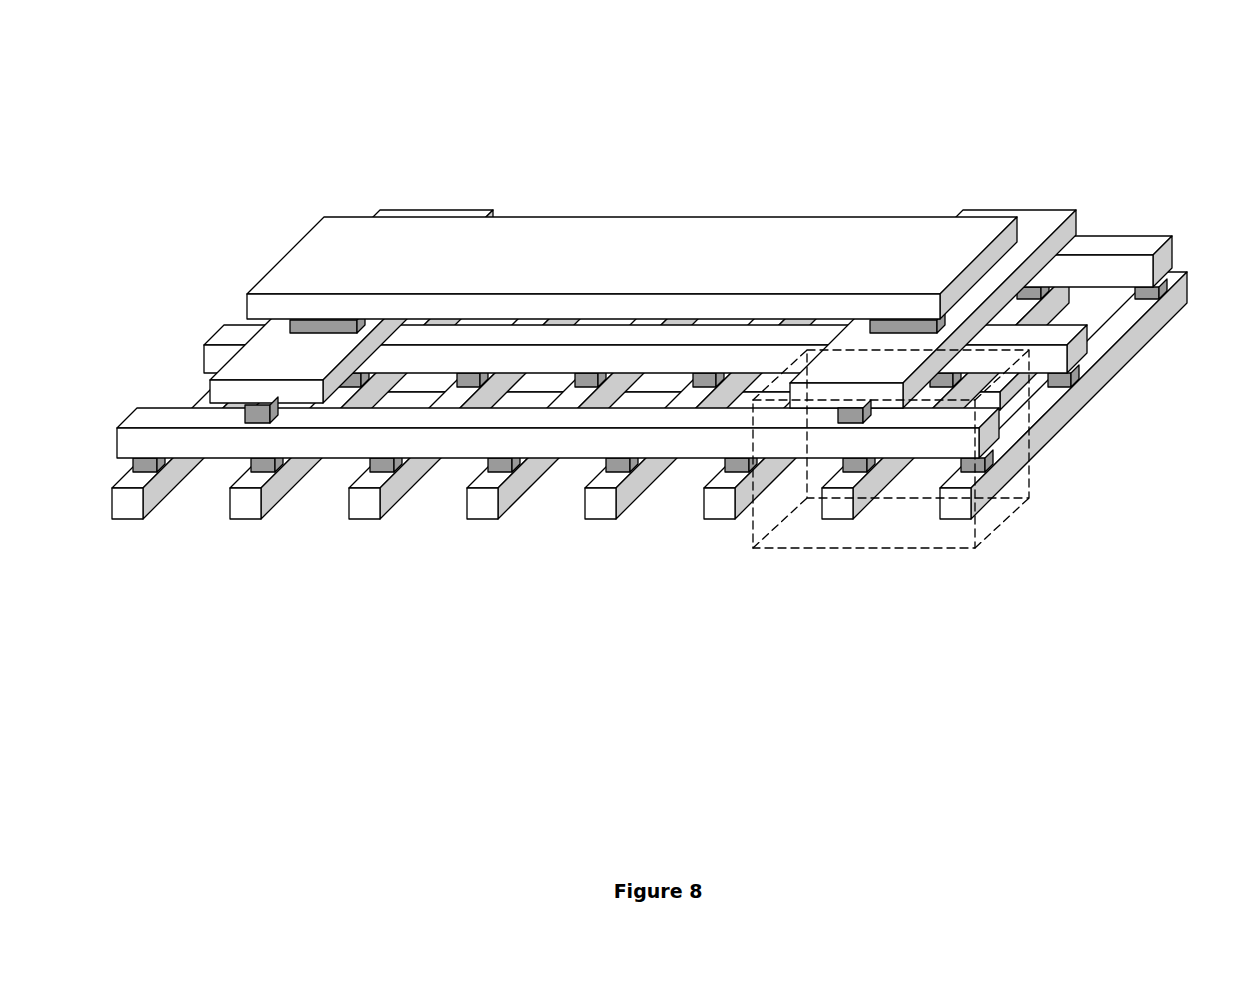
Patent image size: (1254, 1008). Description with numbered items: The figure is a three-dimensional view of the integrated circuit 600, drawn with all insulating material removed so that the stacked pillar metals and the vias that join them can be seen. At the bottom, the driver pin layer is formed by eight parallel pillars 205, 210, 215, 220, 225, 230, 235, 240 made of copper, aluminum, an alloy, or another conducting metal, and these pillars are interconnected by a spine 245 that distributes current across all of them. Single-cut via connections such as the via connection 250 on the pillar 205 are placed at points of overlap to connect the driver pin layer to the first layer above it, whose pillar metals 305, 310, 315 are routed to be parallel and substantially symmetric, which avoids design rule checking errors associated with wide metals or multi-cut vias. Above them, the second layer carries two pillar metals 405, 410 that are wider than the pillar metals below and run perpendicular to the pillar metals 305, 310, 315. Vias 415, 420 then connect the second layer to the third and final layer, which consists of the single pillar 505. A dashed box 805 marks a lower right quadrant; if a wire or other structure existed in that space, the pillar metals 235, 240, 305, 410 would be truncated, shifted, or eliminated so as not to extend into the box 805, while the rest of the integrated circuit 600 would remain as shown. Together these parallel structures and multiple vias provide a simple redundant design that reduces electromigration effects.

The pillar 205 is at (128, 520).
The pillar 210 is at (245, 520).
The pillar 215 is at (365, 520).
The pillar 220 is at (487, 520).
The pillar 225 is at (610, 520).
The pillar 230 is at (718, 520).
The pillar 235 is at (858, 525).
The pillar 240 is at (975, 520).
The spine 245 is at (997, 397).
The via connection 250 is at (130, 461).
The pillar metal 305 is at (1010, 457).
The pillar metal 310 is at (1085, 365).
The pillar metal 315 is at (1172, 284).
The pillar metal 405 is at (440, 210).
The pillar metal 410 is at (1013, 212).
The via 415 is at (323, 332).
The via connection 420 is at (905, 333).
The pillar 505 is at (668, 217).
The integrated circuit 600 is at (919, 140).
The dashed box 805 is at (955, 555).